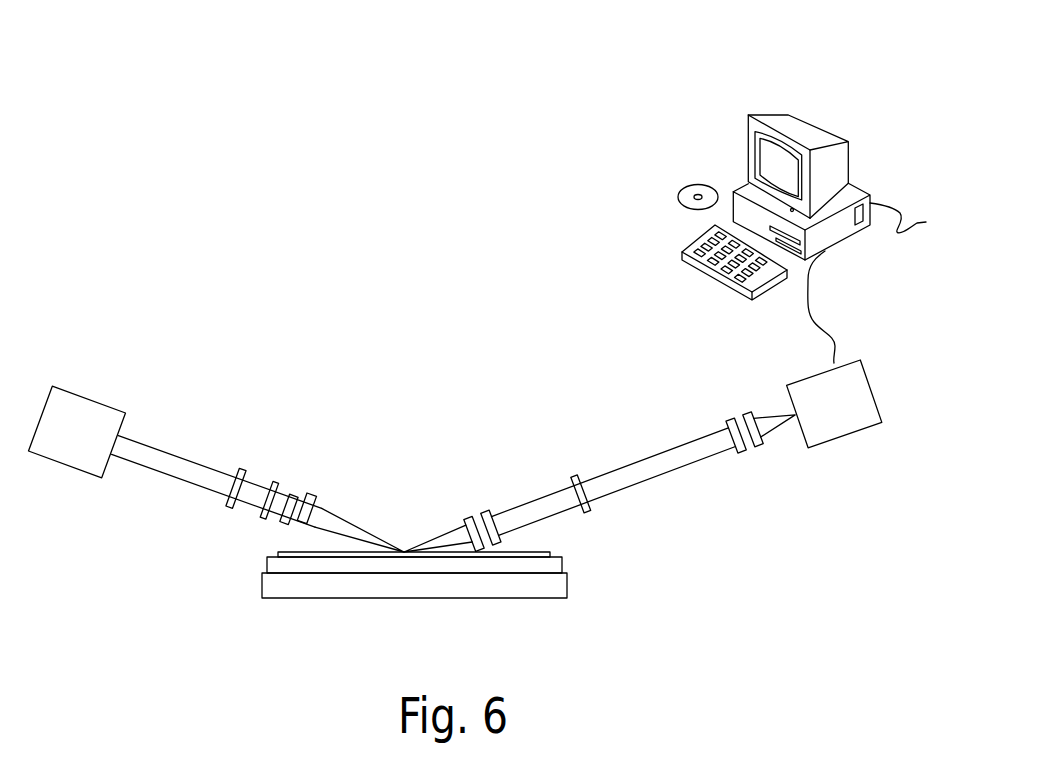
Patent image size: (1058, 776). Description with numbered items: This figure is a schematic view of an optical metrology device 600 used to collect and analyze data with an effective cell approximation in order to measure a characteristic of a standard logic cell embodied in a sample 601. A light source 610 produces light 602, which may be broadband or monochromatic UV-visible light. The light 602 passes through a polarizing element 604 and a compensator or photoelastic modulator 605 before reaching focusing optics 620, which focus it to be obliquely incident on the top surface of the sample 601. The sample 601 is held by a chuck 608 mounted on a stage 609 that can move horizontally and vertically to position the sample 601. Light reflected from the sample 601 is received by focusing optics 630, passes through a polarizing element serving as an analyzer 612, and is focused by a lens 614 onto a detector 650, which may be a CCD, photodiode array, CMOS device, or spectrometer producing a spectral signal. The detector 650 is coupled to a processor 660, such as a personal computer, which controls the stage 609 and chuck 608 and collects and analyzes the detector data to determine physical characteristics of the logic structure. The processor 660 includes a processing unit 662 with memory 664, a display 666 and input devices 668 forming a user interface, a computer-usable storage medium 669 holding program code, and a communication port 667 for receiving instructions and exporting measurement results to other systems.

The optical metrology device 600 is at (207, 318).
The sample 601 is at (404, 551).
The light 602 is at (175, 481).
The polarizing element 604 is at (238, 468).
The compensator or photoelastic modulator 605 is at (262, 518).
The chuck 608 is at (270, 562).
The stage 609 is at (340, 598).
The light source 610 is at (88, 398).
The polarizing element (analyzer) 612 is at (590, 512).
The lens 614 is at (737, 421).
The focusing optics 620 is at (311, 495).
The focusing optics 630 is at (489, 516).
The detector 650 is at (815, 375).
The processor 660 is at (716, 100).
The processing unit 662 is at (871, 192).
The memory 664 is at (817, 240).
The display 666 is at (762, 114).
The communication port 667 is at (903, 229).
The input devices 668 is at (682, 251).
The computer-usable storage medium 669 is at (679, 192).